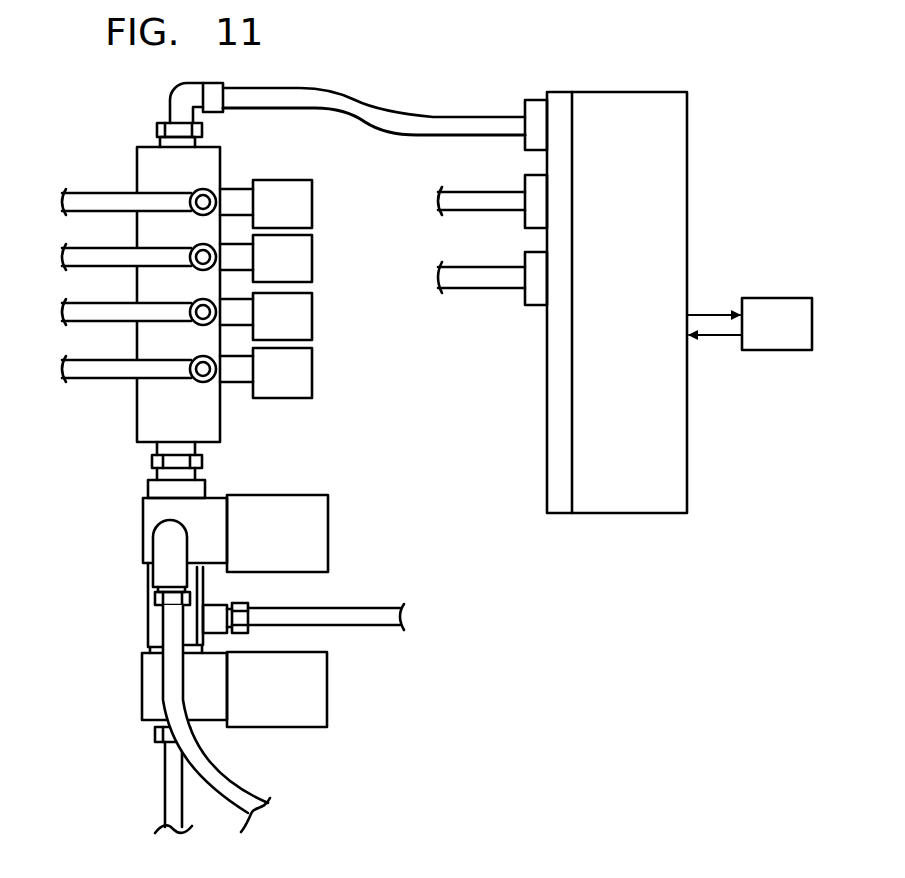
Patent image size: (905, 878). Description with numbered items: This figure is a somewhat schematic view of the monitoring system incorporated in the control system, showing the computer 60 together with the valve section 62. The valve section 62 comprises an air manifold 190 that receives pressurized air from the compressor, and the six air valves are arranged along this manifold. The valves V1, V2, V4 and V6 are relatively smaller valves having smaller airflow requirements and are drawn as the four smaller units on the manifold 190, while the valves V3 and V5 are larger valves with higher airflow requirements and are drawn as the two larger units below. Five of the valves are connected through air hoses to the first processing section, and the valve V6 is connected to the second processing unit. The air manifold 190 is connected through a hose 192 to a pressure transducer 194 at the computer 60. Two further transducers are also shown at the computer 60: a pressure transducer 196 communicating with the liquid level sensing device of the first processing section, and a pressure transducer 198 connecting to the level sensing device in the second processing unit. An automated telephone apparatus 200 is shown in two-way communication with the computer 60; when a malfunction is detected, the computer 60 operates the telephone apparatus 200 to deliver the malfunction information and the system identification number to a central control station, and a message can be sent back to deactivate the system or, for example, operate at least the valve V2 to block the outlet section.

The valve section 62 is at (207, 468).
The air manifold 190 is at (137, 180).
The hose 192 is at (340, 103).
The pressure transducer 194 is at (530, 112).
The pressure transducer 196 is at (532, 187).
The pressure transducer 198 is at (532, 262).
The computer 60 is at (607, 289).
The automated telephone apparatus 200 is at (758, 303).
The air valve V6 is at (305, 212).
The air valve V4 is at (308, 265).
The air valve V2 is at (307, 320).
The air valve V1 is at (307, 377).
The air valve V3 is at (320, 530).
The air valve V5 is at (317, 692).